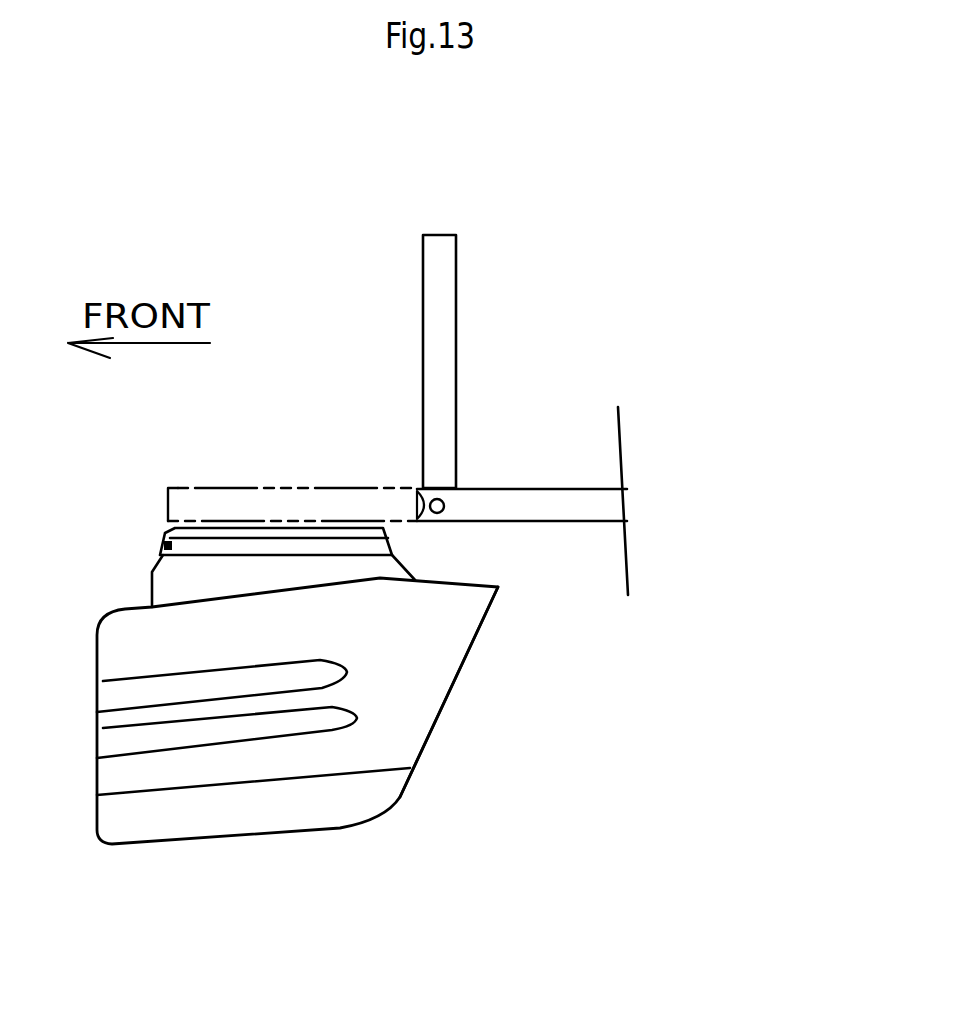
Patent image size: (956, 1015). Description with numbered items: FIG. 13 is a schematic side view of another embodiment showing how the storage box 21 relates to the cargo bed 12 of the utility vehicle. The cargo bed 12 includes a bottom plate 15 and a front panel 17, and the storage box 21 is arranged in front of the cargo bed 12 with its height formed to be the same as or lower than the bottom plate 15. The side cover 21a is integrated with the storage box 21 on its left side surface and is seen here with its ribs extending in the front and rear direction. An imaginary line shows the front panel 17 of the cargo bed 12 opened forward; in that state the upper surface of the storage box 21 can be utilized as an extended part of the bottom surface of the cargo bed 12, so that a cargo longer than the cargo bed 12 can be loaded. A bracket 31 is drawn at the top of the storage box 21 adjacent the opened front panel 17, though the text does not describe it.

The cargo bed 12 is at (561, 358).
The bottom plate 15 is at (553, 498).
The front panel 17 is at (282, 488).
The left storage box 21 is at (178, 588).
The side cover 21a is at (393, 717).
The bracket 31 is at (220, 540).